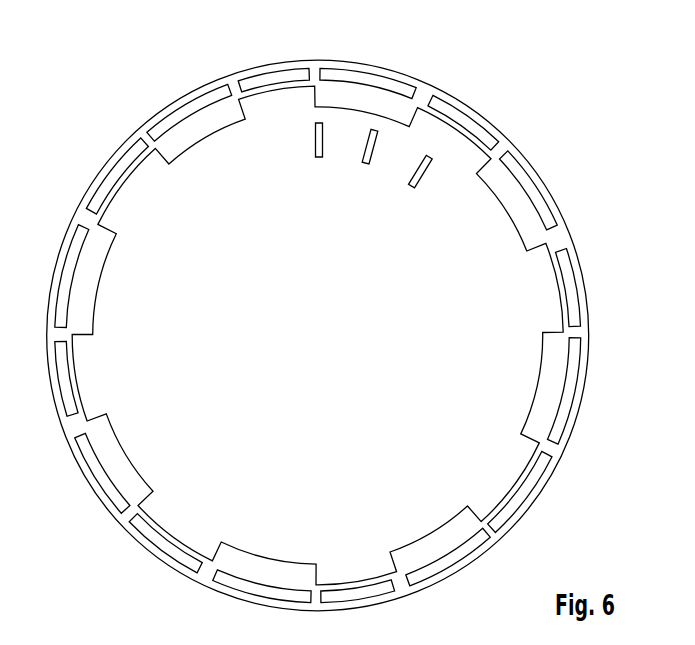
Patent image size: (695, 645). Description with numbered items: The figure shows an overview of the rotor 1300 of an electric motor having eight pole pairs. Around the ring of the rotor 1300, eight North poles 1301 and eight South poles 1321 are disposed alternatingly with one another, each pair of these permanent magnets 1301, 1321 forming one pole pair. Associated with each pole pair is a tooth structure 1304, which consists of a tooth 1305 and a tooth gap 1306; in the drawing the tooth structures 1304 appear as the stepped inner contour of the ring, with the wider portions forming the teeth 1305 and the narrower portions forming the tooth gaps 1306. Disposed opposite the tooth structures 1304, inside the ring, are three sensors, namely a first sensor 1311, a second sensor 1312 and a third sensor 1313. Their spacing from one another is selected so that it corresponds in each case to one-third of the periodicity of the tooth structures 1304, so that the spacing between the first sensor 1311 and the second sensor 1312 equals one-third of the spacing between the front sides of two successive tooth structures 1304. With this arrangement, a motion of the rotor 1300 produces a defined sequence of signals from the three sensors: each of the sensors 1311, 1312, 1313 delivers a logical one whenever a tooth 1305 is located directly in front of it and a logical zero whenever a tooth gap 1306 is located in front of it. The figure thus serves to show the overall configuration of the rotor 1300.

The rotor 1300 is at (230, 88).
The North pole 1301 is at (370, 78).
The tooth structure 1304 is at (150, 272).
The tooth 1305 is at (432, 547).
The tooth gap 1306 is at (543, 292).
The first sensor 1311 is at (317, 160).
The second sensor 1312 is at (367, 163).
The third sensor 1313 is at (413, 180).
The South pole 1321 is at (470, 127).